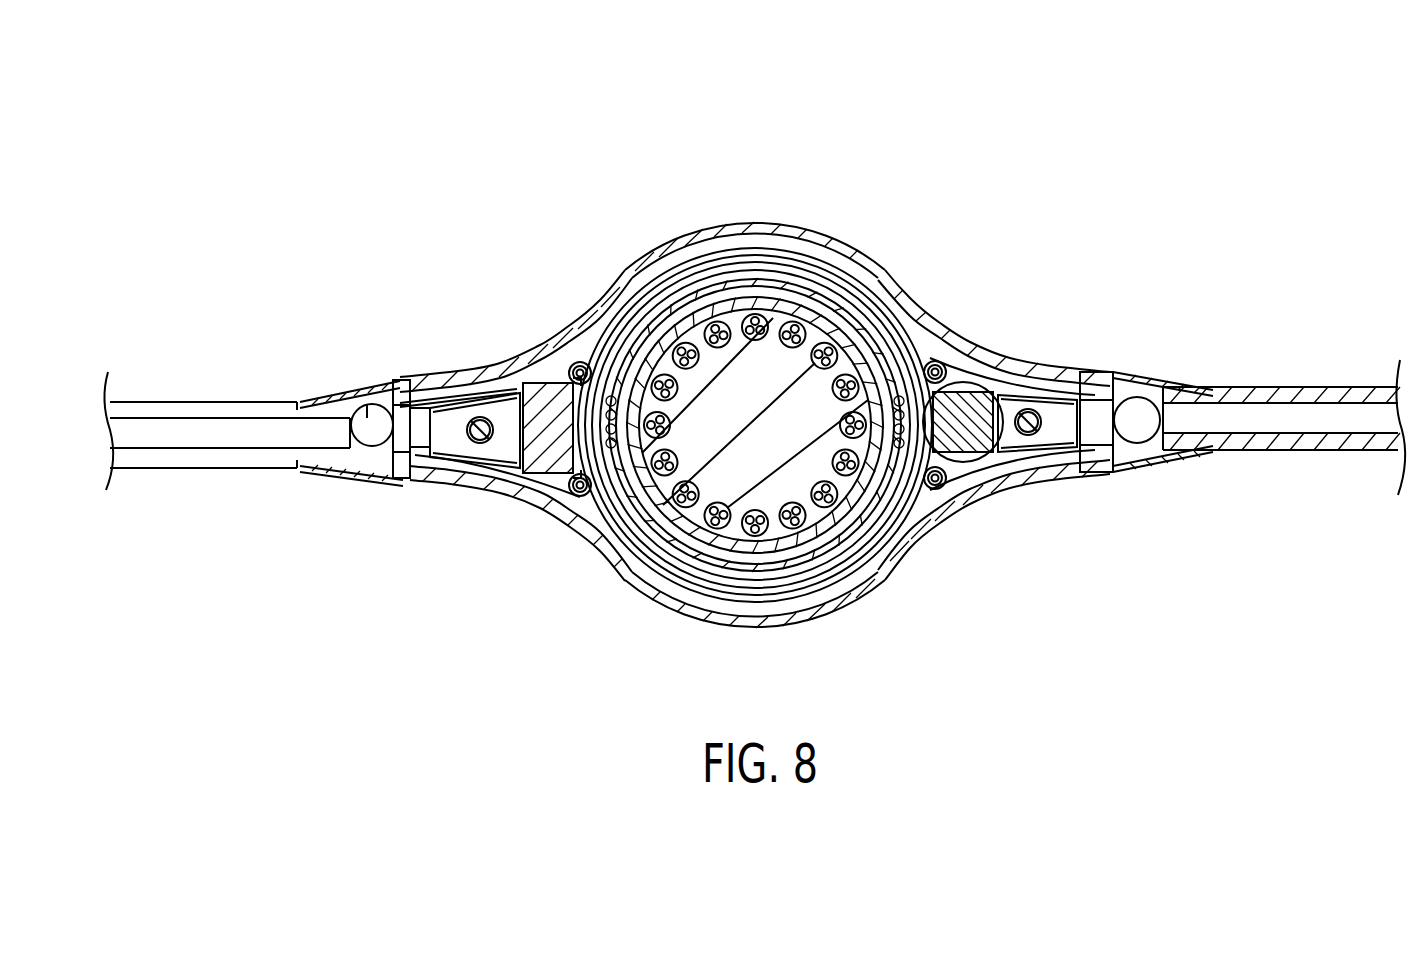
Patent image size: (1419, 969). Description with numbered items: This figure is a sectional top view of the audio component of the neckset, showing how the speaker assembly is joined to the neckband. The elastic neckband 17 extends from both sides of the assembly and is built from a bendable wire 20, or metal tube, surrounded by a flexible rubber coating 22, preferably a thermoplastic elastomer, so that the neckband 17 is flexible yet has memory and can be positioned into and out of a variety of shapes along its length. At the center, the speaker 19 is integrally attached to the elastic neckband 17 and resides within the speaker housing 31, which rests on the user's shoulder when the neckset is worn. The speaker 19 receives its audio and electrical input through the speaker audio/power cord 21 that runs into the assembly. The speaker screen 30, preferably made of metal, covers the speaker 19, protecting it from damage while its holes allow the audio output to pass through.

The elastic neckband 17 is at (1313, 448).
The speaker 19 is at (833, 505).
The bendable wire 20 is at (1257, 423).
The speaker audio/power cord 21 is at (368, 412).
The flexible rubber coating 22 is at (1232, 443).
The speaker screen 30 is at (740, 322).
The speaker housing 31 is at (808, 565).